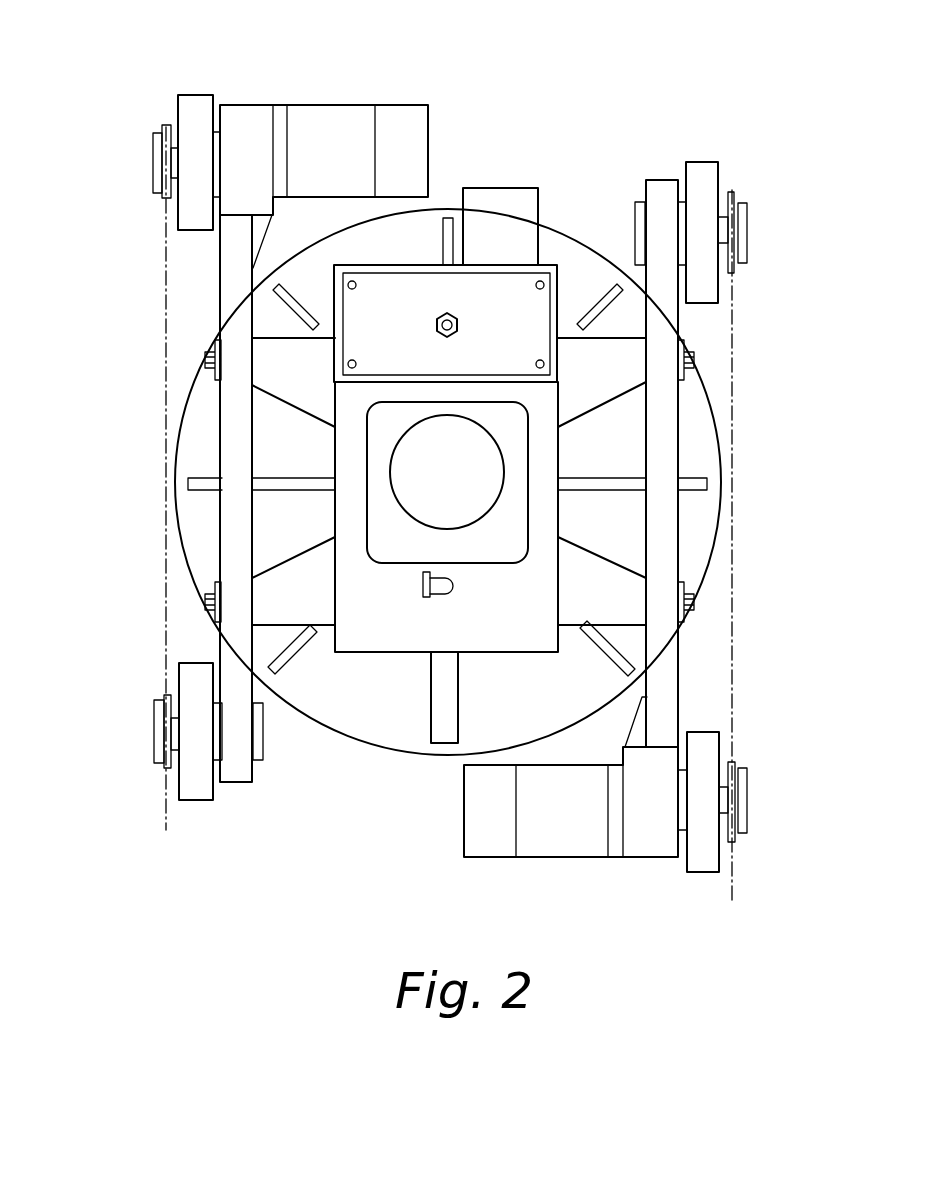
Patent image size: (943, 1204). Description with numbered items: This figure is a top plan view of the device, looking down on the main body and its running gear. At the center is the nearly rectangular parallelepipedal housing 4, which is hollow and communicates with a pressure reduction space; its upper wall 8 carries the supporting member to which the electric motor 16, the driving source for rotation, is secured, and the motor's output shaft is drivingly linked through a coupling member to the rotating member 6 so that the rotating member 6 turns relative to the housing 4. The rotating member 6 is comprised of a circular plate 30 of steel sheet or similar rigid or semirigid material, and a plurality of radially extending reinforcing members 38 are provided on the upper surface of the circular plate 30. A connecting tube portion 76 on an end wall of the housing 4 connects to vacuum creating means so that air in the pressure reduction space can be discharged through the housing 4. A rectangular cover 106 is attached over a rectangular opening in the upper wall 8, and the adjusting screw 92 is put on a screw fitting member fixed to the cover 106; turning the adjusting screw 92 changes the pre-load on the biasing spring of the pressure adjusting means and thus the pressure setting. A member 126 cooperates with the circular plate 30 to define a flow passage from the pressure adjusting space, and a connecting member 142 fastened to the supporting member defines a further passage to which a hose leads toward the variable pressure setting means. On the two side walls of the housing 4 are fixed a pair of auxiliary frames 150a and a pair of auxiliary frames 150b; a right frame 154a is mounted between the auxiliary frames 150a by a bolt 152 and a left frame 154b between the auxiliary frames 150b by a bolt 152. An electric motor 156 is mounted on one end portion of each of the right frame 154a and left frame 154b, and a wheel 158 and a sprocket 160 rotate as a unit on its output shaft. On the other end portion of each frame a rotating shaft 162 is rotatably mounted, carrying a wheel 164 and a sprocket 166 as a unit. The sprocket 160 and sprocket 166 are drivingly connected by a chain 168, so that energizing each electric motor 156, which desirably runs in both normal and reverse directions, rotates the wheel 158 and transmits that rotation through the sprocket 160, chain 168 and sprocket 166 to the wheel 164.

The housing 4 is at (490, 658).
The rotating member 6 is at (407, 760).
The upper wall 8 is at (560, 517).
The electric motor 16 is at (477, 500).
The circular plate 30 is at (334, 712).
The reinforcing members 38 is at (303, 303).
The connecting tube portion 76 is at (515, 197).
The adjusting screw 92 is at (458, 325).
The cover 106 is at (403, 280).
The member 126 is at (430, 706).
The connecting member 142 is at (440, 593).
The auxiliary frames 150a is at (593, 400).
The auxiliary frames 150b is at (297, 393).
The bolt 152 is at (208, 600).
The right frame 154a is at (670, 689).
The left frame 154b is at (222, 432).
The electric motor 156 is at (357, 108).
The wheel 158 is at (198, 102).
The sprocket 160 is at (162, 128).
The rotating shaft 162 is at (729, 255).
The wheel 164 is at (713, 182).
The sprocket 166 is at (735, 198).
The chain 168 is at (735, 455).